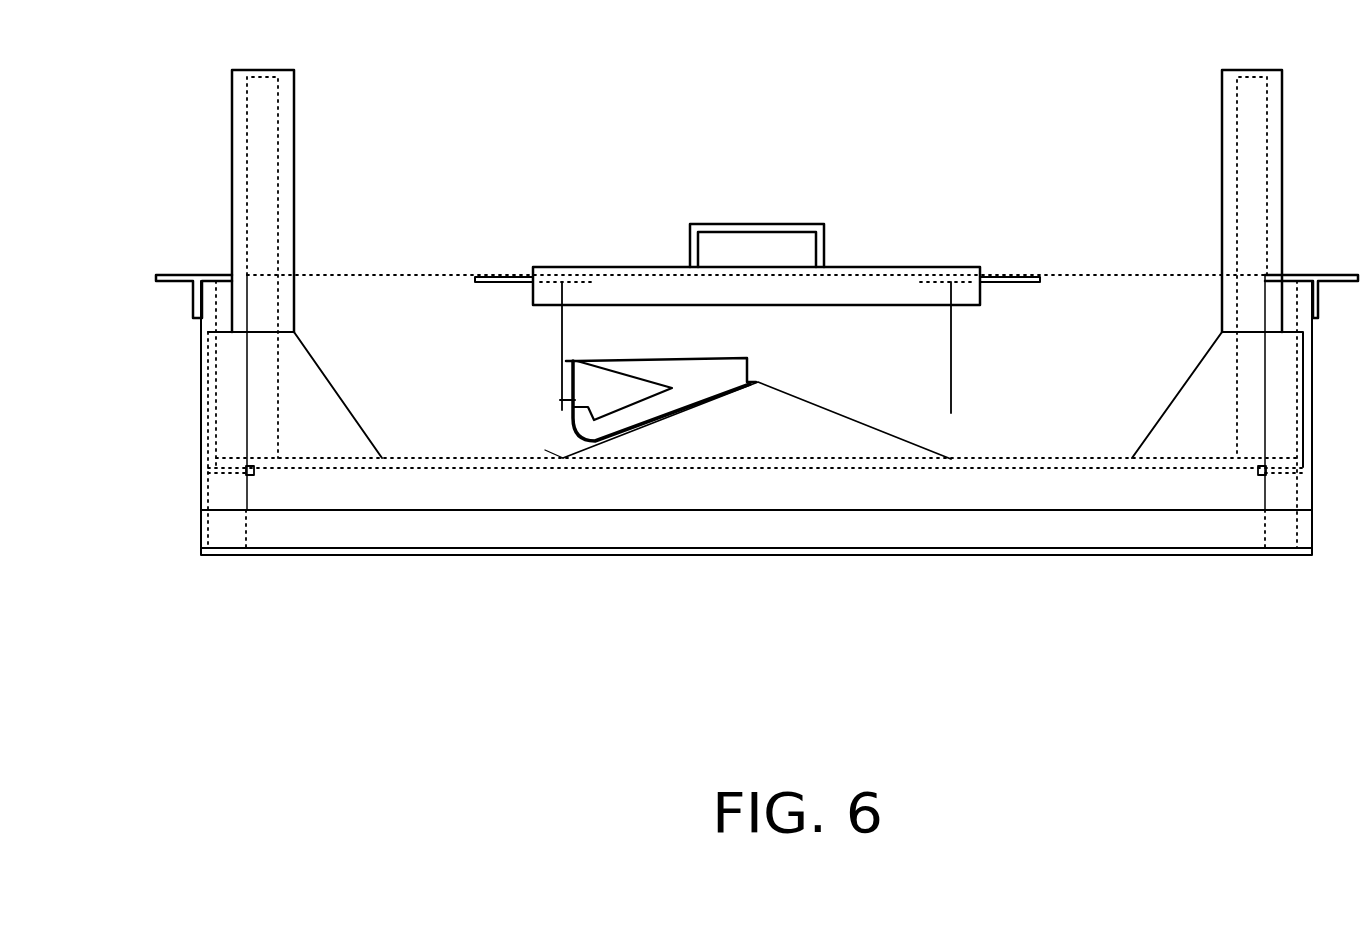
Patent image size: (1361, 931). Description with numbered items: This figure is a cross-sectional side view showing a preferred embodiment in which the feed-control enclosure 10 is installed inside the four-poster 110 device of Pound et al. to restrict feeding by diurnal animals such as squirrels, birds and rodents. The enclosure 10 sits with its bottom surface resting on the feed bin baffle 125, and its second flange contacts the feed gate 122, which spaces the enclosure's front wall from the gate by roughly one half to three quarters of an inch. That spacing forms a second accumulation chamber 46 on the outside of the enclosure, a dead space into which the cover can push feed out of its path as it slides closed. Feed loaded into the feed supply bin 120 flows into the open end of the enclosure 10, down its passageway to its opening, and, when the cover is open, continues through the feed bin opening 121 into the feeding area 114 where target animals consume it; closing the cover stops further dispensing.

The enclosure 10 is at (630, 357).
The second accumulation chamber 46 is at (567, 405).
The 4-poster 110 is at (1015, 565).
The feeding area 114 is at (545, 450).
The feed supply bin 120 is at (826, 320).
The feed bin opening 121 is at (952, 433).
The feed gate 122 is at (562, 333).
The feed bin baffle 125 is at (848, 418).